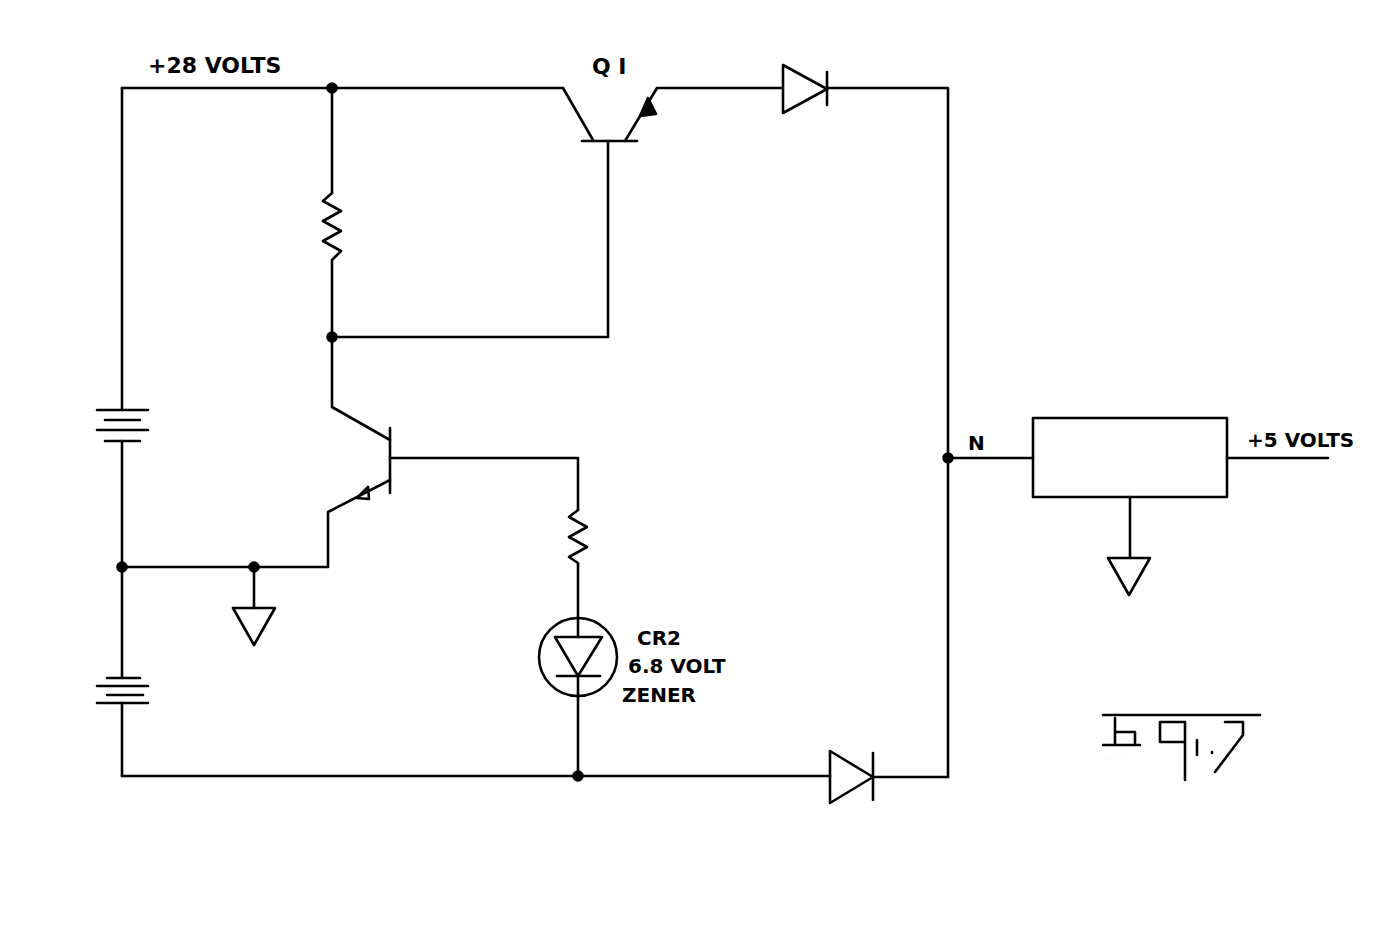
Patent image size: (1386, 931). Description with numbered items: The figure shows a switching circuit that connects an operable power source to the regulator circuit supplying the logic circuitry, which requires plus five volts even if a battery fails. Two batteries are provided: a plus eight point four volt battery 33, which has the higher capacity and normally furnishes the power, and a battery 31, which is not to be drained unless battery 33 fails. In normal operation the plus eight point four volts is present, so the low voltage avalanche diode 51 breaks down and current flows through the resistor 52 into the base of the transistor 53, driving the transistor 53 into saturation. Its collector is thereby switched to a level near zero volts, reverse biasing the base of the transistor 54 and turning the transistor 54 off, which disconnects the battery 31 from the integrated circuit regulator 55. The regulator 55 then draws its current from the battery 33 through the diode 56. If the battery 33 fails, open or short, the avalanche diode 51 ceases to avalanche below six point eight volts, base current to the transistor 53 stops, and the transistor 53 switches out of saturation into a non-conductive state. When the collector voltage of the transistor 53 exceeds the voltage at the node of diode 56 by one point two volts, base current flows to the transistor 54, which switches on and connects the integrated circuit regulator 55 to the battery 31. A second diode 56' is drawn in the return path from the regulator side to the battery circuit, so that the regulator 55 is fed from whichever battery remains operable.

The battery 31 is at (145, 410).
The battery 33 is at (150, 700).
The low voltage avalanche diode 51 is at (547, 660).
The resistor 52 is at (584, 520).
The transistor 53 is at (392, 442).
The transistor 54 is at (624, 143).
The integrated circuit regulator 55 is at (1153, 418).
The diode 56 is at (899, 421).
The diode 56' is at (878, 803).